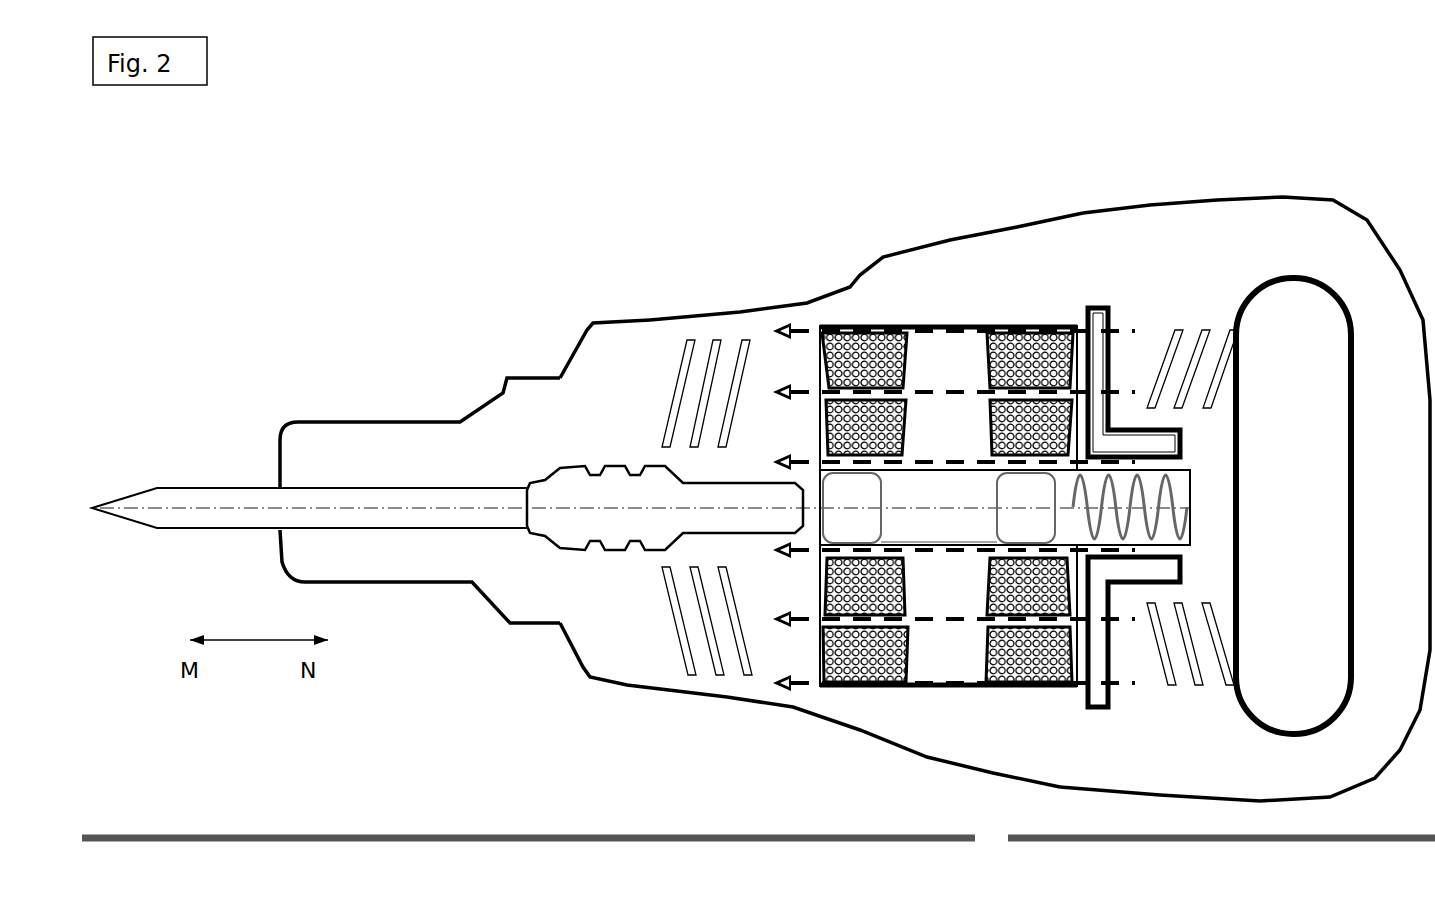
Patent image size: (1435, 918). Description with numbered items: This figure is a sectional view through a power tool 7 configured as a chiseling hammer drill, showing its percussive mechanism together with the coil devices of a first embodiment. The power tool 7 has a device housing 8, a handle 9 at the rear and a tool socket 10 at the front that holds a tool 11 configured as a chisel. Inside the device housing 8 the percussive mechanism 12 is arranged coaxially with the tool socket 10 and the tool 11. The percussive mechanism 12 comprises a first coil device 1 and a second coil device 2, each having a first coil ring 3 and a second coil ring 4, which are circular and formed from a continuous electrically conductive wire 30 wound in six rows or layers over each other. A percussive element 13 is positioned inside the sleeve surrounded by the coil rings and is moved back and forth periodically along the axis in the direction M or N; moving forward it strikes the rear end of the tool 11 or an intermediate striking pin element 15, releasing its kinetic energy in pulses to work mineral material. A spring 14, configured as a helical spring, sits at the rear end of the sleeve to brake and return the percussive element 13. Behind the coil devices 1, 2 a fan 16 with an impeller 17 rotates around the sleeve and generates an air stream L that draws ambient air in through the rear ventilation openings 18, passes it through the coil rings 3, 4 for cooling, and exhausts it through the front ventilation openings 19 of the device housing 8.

The first coil device 1 is at (862, 312).
The second coil device 2 is at (1028, 305).
The first coil ring 3 is at (837, 667).
The second coil ring 4 is at (885, 607).
The power tool 7 is at (855, 520).
The device housing 8 is at (633, 355).
The handle 9 is at (1357, 750).
The tool socket 10 is at (412, 562).
The tool 11 is at (224, 500).
The percussive mechanism 12 is at (762, 275).
The percussive element 13 is at (973, 490).
The spring 14 is at (1150, 518).
The intermediate striking pin element 15 is at (575, 526).
The fan 16 is at (1144, 428).
The impeller 17 is at (1100, 353).
The rear ventilation openings 18 is at (1210, 318).
The front ventilation openings 19 is at (670, 342).
The electrically conductive wire 30 is at (863, 675).